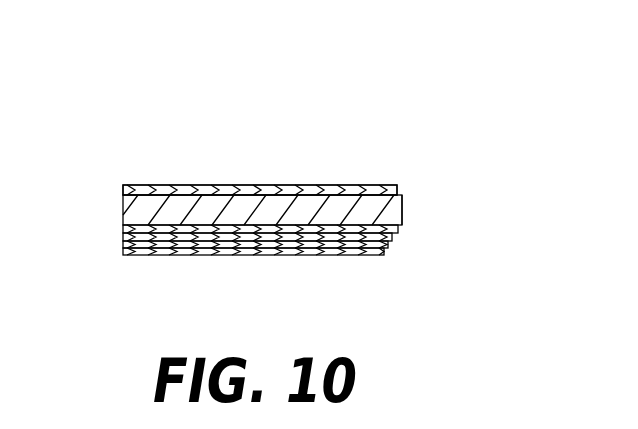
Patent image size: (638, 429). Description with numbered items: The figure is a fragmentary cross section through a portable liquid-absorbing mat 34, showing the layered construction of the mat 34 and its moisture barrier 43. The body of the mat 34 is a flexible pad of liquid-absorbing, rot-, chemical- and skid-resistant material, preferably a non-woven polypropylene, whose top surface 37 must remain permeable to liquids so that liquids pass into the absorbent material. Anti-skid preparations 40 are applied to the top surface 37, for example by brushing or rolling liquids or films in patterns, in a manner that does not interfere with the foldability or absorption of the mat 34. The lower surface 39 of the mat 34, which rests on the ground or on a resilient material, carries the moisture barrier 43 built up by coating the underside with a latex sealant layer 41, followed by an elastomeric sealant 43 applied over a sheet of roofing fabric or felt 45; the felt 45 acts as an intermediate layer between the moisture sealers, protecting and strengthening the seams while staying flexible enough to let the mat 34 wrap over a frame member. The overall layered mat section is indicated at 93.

The laminate assembly 93 is at (408, 117).
The top surface 37 is at (322, 190).
The anti-skid preparations 40 is at (142, 190).
The lower surface 39 is at (401, 213).
The mat 34 is at (404, 201).
The latex sealant layer 41 is at (400, 234).
The roofing fabric or felt 45 is at (123, 242).
The elastomeric sealant 43 is at (170, 257).